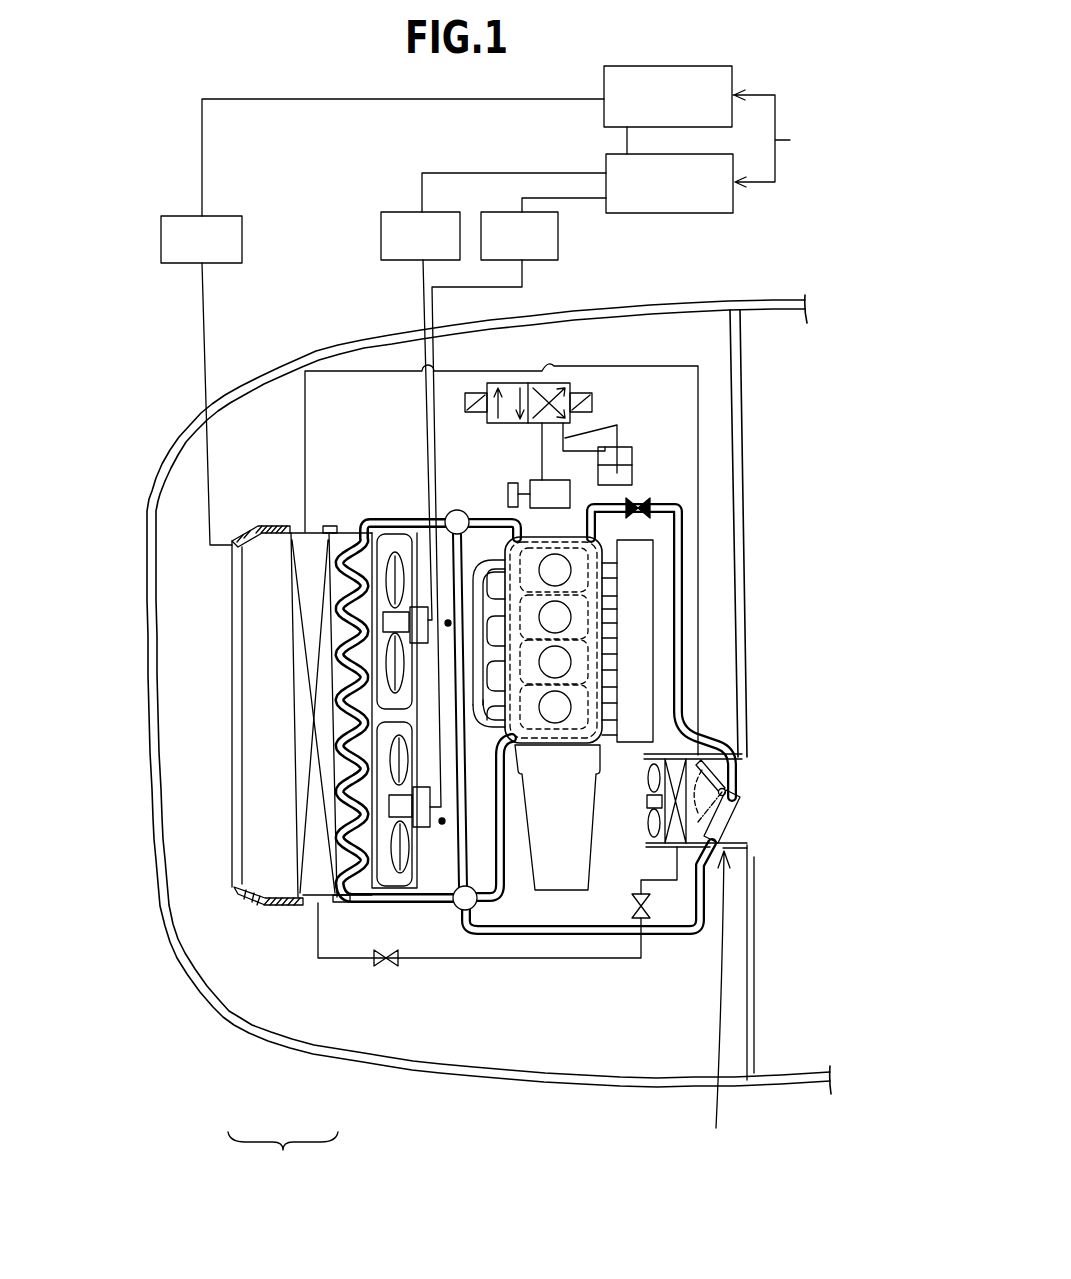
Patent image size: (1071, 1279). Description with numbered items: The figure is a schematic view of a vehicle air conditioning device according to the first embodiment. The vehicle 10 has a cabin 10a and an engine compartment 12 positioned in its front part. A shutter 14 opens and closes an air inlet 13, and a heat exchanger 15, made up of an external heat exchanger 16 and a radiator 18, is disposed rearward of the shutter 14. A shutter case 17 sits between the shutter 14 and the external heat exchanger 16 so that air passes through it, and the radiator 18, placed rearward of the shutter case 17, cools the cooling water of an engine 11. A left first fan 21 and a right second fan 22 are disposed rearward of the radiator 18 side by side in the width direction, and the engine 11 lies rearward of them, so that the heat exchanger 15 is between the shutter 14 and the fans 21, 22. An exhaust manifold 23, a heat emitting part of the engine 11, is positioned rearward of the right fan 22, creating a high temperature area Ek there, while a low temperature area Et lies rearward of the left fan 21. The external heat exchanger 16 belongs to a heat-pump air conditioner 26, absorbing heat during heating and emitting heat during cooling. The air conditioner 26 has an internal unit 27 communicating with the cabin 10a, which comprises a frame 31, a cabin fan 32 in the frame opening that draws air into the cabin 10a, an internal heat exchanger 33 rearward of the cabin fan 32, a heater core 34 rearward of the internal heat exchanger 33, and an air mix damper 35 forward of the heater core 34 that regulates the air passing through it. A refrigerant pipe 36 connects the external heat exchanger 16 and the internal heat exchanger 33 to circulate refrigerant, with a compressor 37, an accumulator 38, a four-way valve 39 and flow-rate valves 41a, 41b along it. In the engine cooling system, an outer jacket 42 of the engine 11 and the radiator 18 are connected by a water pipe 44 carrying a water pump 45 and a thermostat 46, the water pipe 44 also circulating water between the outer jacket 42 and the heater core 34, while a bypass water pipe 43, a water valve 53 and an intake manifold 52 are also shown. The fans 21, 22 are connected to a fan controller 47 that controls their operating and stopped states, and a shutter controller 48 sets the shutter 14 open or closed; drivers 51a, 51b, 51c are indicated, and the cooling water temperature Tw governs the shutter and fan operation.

The vehicle 10 is at (134, 141).
The cabin 10a is at (825, 965).
The engine 11 is at (616, 646).
The engine compartment 12 is at (612, 1076).
The air inlet 13 is at (238, 870).
The shutter 14 is at (240, 787).
The heat exchanger 15 is at (283, 1154).
The external heat exchanger 16 is at (313, 920).
The shutter case 17 is at (263, 900).
The radiator 18 is at (362, 919).
The left first fan 21 is at (352, 900).
The right second fan 22 is at (395, 573).
The exhaust manifold 23 is at (483, 573).
The heat-pump air conditioner 26 is at (657, 350).
The internal unit 27 is at (717, 1003).
The frame 31 is at (693, 756).
The cabin fan 32 is at (652, 822).
The internal heat exchanger 33 is at (685, 758).
The heater core 34 is at (733, 812).
The air mix damper 35 is at (713, 772).
The refrigerant pipe 36 is at (478, 910).
The compressor 37 is at (538, 491).
The accumulator 38 is at (630, 446).
The four-way valve 39 is at (548, 382).
The valve 41a is at (387, 968).
The valve 41b is at (648, 908).
The outer jacket 42 is at (604, 745).
The bypass water pipe 43 is at (508, 897).
The water pipe 44 is at (415, 861).
The water pump 45 is at (465, 848).
The thermostat 46 is at (457, 510).
The fan controller 47 is at (735, 200).
The shutter controller 48 is at (735, 75).
The driver 51a is at (161, 240).
The driver 51b is at (381, 236).
The driver 51c is at (558, 236).
The intake manifold 52 is at (638, 585).
The water valve 53 is at (645, 504).
The high temperature area Ek is at (448, 623).
The low temperature area Et is at (442, 822).
The temperature of the cooling water Tw is at (781, 138).